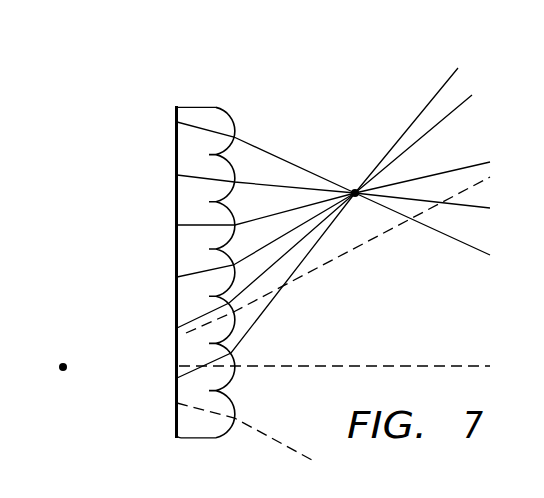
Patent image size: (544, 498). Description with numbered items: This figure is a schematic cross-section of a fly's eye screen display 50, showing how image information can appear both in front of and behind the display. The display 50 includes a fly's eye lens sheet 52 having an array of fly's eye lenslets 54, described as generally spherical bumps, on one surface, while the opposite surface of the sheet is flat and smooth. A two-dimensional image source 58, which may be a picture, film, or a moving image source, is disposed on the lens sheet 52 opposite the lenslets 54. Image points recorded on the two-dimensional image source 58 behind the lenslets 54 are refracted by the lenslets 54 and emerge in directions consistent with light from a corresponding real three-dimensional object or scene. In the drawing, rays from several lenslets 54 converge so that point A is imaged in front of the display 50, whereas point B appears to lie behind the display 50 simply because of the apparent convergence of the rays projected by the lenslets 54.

The fly's eye screen display 50 is at (263, 256).
The fly's eye lens sheet 52 is at (232, 245).
The fly's eye lenslets 54 is at (234, 122).
The two-dimensional image source 58 is at (168, 242).
The point A is at (354, 187).
The point B is at (63, 358).